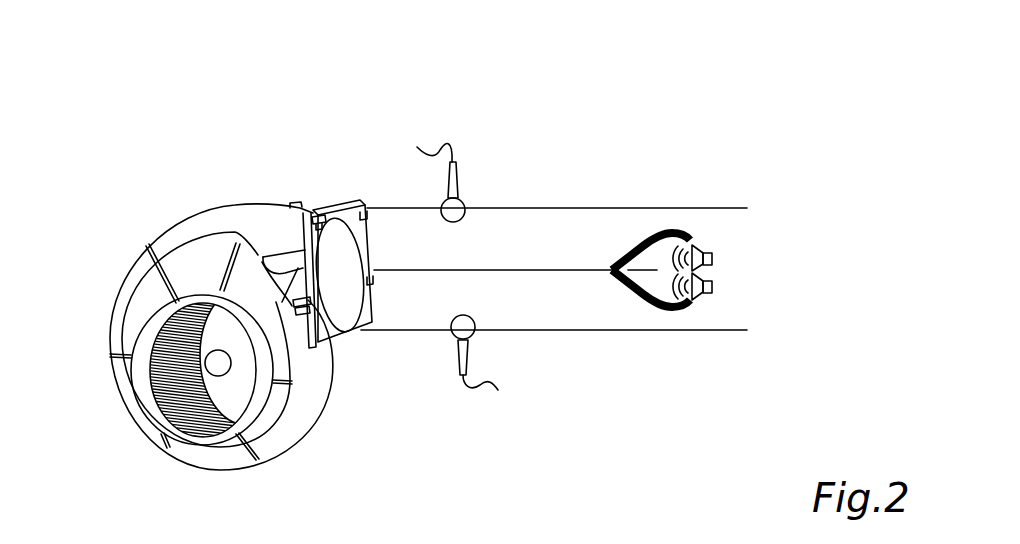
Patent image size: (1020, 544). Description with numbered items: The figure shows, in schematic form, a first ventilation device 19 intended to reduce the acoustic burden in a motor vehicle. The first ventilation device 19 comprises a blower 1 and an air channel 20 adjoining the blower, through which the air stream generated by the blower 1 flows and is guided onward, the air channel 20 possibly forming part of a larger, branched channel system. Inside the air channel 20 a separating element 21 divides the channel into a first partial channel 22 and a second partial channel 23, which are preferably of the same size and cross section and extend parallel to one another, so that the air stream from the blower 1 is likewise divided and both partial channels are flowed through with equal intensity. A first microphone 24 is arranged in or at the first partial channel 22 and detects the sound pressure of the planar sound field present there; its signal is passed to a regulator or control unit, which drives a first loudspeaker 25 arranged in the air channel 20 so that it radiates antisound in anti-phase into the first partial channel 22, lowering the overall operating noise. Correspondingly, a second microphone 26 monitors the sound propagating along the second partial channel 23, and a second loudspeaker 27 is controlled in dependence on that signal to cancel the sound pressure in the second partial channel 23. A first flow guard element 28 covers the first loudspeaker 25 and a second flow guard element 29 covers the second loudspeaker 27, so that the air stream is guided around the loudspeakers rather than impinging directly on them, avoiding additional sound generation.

The blower 1 is at (231, 225).
The first ventilation device 19 is at (347, 125).
The air channel 20 is at (662, 207).
The separating element 21 is at (412, 268).
The first partial channel 22 is at (557, 254).
The second partial channel 23 is at (557, 312).
The first microphone 24 is at (460, 177).
The first loudspeaker 25 is at (713, 262).
The second microphone 26 is at (457, 360).
The second loudspeaker 27 is at (713, 283).
The first flow guard element 28 is at (638, 238).
The second flow guard element 29 is at (633, 303).